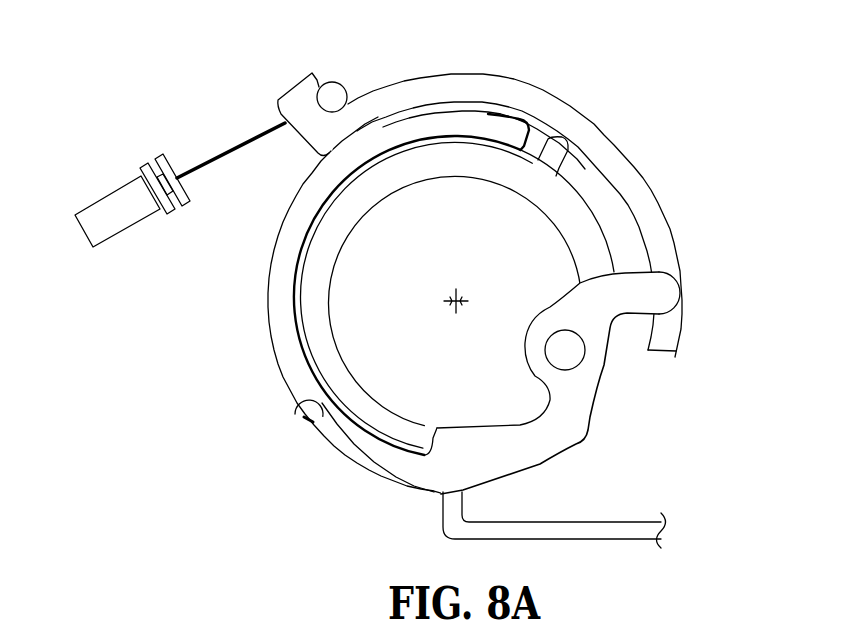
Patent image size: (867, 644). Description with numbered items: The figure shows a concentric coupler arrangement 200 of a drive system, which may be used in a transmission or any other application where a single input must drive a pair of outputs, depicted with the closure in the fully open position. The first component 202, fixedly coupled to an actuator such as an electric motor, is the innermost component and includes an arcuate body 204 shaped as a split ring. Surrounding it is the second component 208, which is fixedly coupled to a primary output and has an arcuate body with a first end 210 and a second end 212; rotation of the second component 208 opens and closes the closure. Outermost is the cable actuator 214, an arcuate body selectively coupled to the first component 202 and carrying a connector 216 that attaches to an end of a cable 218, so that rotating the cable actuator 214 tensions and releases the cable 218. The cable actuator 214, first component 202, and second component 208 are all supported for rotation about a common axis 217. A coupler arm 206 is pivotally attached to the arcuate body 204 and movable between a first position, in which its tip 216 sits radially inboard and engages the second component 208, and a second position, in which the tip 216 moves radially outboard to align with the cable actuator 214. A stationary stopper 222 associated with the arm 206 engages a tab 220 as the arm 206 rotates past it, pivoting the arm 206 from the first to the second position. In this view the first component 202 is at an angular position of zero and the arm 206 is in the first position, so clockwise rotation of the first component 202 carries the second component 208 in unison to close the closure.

The coupler arrangement 200 is at (421, 277).
The first component 202 is at (472, 160).
The arcuate body 204 is at (332, 248).
The coupler arm 206 is at (566, 431).
The second component 208 is at (278, 317).
The first end 210 is at (298, 409).
The second end 212 is at (527, 138).
The cable actuator 214 is at (655, 193).
The connector 216 is at (327, 406).
The common axis 217 is at (470, 290).
The cable 218 is at (110, 193).
The tab 220 is at (656, 292).
The stopper 222 is at (563, 522).